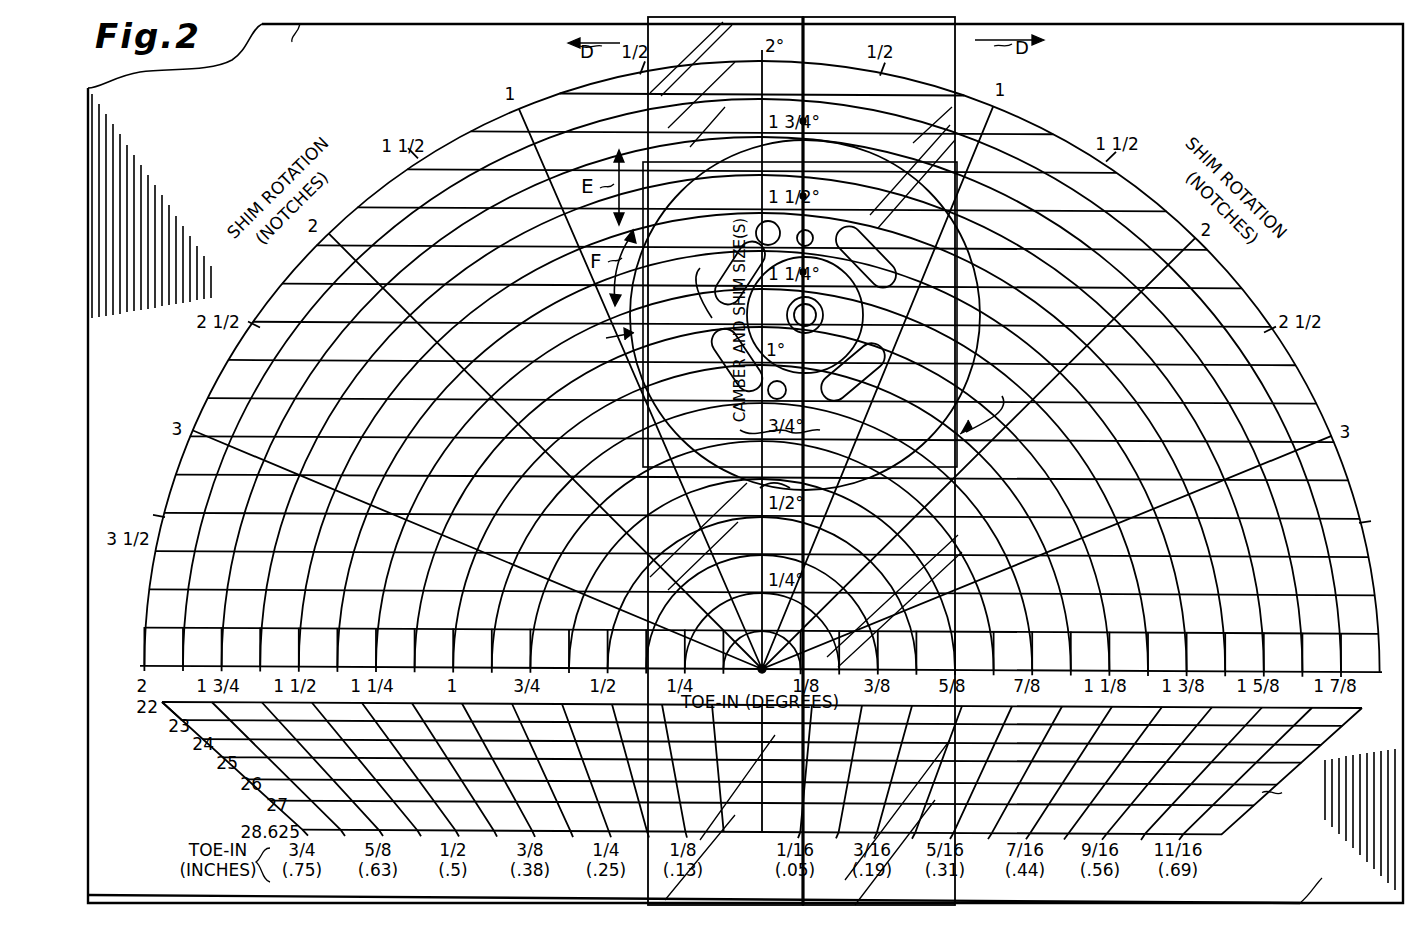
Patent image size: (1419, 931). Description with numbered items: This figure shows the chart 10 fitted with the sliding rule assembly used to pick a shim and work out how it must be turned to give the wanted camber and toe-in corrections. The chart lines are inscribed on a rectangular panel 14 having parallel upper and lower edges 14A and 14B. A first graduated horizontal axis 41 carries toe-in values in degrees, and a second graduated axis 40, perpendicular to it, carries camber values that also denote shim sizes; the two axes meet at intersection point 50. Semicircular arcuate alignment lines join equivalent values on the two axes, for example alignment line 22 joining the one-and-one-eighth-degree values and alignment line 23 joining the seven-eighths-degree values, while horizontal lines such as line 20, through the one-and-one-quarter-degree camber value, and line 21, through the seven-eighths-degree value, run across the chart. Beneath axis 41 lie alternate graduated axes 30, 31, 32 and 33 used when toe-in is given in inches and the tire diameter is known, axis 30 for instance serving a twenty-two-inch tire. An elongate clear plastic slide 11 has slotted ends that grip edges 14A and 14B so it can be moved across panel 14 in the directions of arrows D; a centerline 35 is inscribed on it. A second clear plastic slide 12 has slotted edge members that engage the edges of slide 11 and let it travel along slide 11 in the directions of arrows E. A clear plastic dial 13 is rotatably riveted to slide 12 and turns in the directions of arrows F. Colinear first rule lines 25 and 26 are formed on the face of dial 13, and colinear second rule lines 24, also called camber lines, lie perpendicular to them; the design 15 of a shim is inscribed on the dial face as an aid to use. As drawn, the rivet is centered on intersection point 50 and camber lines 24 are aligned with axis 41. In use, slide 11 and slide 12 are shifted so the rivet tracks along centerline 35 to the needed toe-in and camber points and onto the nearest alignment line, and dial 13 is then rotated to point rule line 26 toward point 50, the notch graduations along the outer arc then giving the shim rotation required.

The chart 10 is at (1089, 82).
The elongate slide 11 is at (958, 58).
The slide 12 is at (982, 403).
The dial 13 is at (607, 342).
The rectangular panel 14 is at (142, 66).
The upper edge 14A is at (316, 40).
The lower edge 14B is at (1347, 826).
The design of a shim 15 is at (910, 286).
The horizontal line 20 is at (1220, 280).
The horizontal line 21 is at (1304, 402).
The arcuate alignment line 22 is at (416, 662).
The semicircular alignment line 23 is at (530, 662).
The second rule lines 24 is at (700, 268).
The first rule line 25 is at (806, 215).
The first rule line 26 is at (806, 476).
The alternate graduated axis 30 is at (1340, 714).
The alternate graduated axis 31 is at (1270, 792).
The grid bottom line 32 is at (1230, 830).
The alternate horizontal graduated axis 33 is at (218, 712).
The centerline 35 is at (805, 50).
The second graduated axis 40 is at (748, 74).
The first graduated horizontal axis 41 is at (206, 650).
The intersection point 50 is at (757, 672).